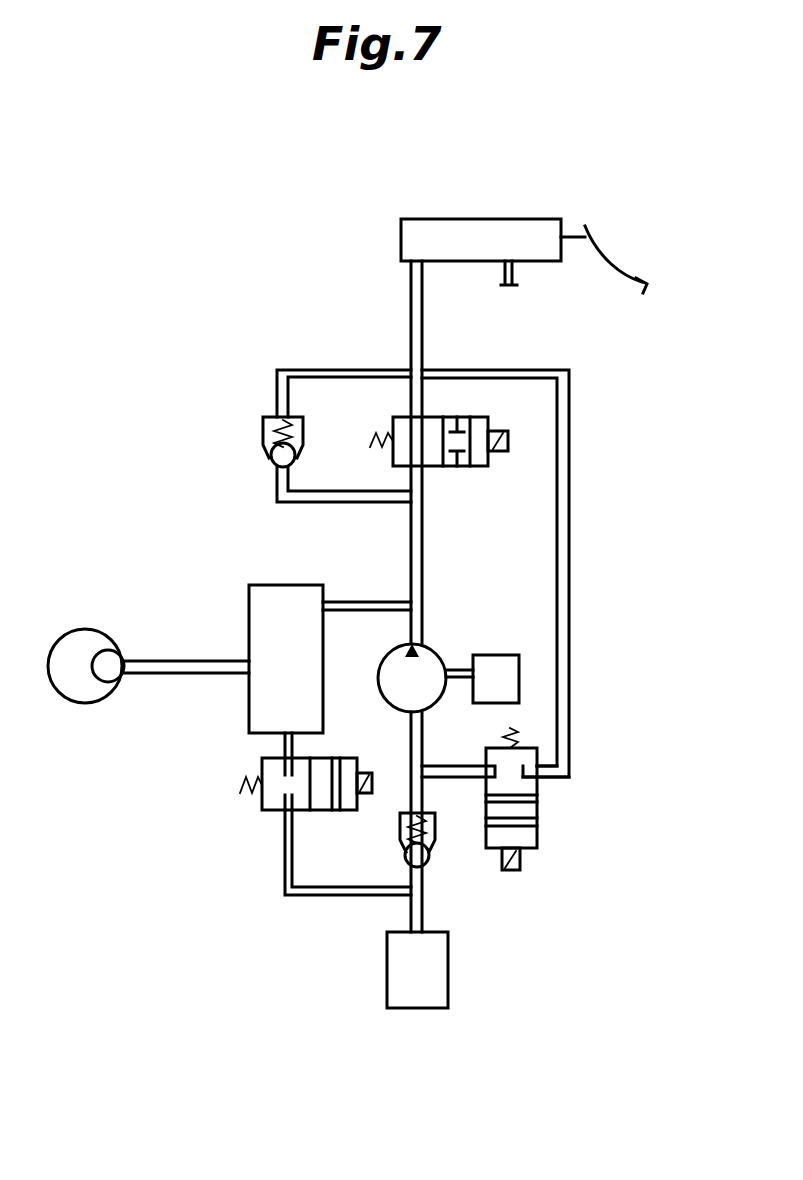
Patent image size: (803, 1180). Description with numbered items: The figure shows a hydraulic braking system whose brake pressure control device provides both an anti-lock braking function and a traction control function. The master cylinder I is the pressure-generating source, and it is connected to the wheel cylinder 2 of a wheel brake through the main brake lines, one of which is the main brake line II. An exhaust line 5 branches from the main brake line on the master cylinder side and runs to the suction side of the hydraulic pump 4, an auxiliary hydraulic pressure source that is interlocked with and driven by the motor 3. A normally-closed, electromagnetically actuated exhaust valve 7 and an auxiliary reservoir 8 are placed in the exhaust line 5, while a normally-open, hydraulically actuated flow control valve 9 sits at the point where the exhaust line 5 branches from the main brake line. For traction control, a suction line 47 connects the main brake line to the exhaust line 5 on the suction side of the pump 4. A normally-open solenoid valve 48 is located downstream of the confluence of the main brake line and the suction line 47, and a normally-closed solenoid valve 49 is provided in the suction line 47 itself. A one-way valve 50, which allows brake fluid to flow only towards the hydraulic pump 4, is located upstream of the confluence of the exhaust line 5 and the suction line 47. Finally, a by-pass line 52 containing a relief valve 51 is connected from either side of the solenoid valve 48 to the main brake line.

The master cylinder I is at (492, 223).
The main brake line II is at (515, 271).
The wheel cylinder 2 is at (107, 682).
The motor 3 is at (493, 655).
The hydraulic pump 4 is at (430, 650).
The exhaust line 5 is at (302, 897).
The exhaust valve 7 is at (262, 808).
The auxiliary reservoir 8 is at (448, 952).
The flow control valve 9 is at (242, 600).
The suction line 47 is at (570, 553).
The solenoid valve 48 is at (495, 422).
The solenoid valve 49 is at (537, 805).
The one-way valve 50 is at (435, 852).
The relief valve 51 is at (262, 432).
The by-pass line 52 is at (362, 370).